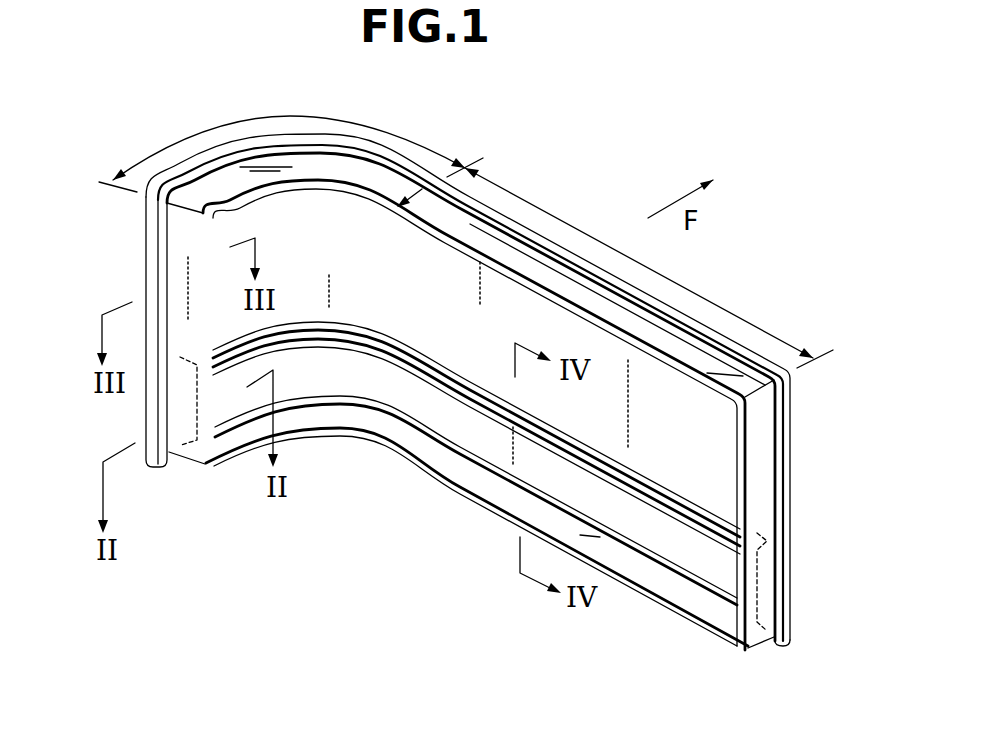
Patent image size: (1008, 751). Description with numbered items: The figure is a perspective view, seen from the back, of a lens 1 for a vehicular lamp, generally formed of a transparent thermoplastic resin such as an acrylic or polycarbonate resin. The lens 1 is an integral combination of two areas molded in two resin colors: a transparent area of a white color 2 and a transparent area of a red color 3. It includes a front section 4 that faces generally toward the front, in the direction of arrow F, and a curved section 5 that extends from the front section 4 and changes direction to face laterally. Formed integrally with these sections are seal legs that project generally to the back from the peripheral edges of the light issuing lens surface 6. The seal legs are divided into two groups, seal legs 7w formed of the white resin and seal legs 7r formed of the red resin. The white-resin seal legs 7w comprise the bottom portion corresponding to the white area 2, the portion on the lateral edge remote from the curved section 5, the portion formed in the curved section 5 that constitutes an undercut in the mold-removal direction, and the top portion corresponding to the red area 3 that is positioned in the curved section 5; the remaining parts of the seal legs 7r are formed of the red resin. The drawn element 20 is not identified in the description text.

The lens 1 is at (579, 174).
The transparent area of a white color 2 is at (372, 392).
The transparent area of a red color 3 is at (516, 313).
The front section 4 is at (649, 268).
The curved section 5 is at (291, 147).
The light issuing lens surface 6 is at (432, 344).
The seal legs formed of white resin 7w is at (178, 237).
The seal legs formed of red resin 7r is at (452, 220).
The core member 20 is at (213, 326).